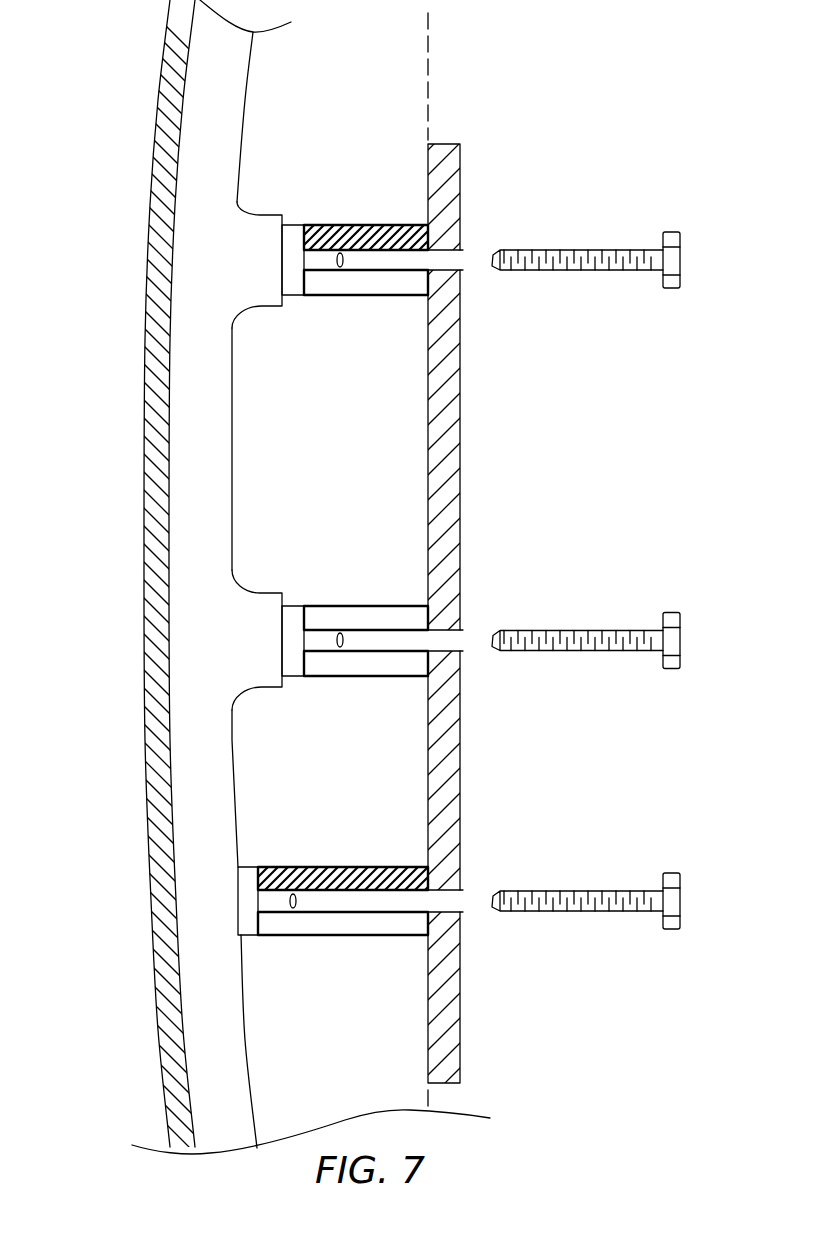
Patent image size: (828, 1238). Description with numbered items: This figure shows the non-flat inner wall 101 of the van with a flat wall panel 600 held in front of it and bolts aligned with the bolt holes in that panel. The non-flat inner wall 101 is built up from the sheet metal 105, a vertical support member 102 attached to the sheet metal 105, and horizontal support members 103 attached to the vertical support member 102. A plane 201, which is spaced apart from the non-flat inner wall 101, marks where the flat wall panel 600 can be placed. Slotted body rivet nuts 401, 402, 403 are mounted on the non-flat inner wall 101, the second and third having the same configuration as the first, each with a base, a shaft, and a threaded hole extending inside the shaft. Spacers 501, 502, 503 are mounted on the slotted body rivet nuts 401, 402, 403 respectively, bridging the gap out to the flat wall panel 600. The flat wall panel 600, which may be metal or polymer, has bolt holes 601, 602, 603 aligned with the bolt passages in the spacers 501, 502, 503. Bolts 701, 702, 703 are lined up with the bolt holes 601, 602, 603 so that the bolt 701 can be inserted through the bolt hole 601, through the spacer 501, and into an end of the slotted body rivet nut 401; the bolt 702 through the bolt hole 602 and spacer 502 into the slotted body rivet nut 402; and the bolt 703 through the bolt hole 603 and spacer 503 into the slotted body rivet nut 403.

The non-flat inner wall 101 is at (244, 385).
The vertical support member 102 is at (213, 473).
The horizontal support member 103 is at (258, 213).
The sheet metal 105 is at (158, 408).
The plane 201 is at (428, 97).
The slotted body rivet nut 401 is at (293, 296).
The slotted body rivet nut 402 is at (293, 677).
The slotted body rivet nut 403 is at (248, 936).
The spacer 501 is at (353, 296).
The spacer 502 is at (353, 677).
The spacer 503 is at (325, 936).
The flat wall panel 600 is at (428, 425).
The bolt hole 601 is at (463, 259).
The bolt hole 602 is at (463, 639).
The bolt hole 603 is at (463, 900).
The bolt 701 is at (575, 271).
The bolt 702 is at (575, 652).
The bolt 703 is at (575, 913).